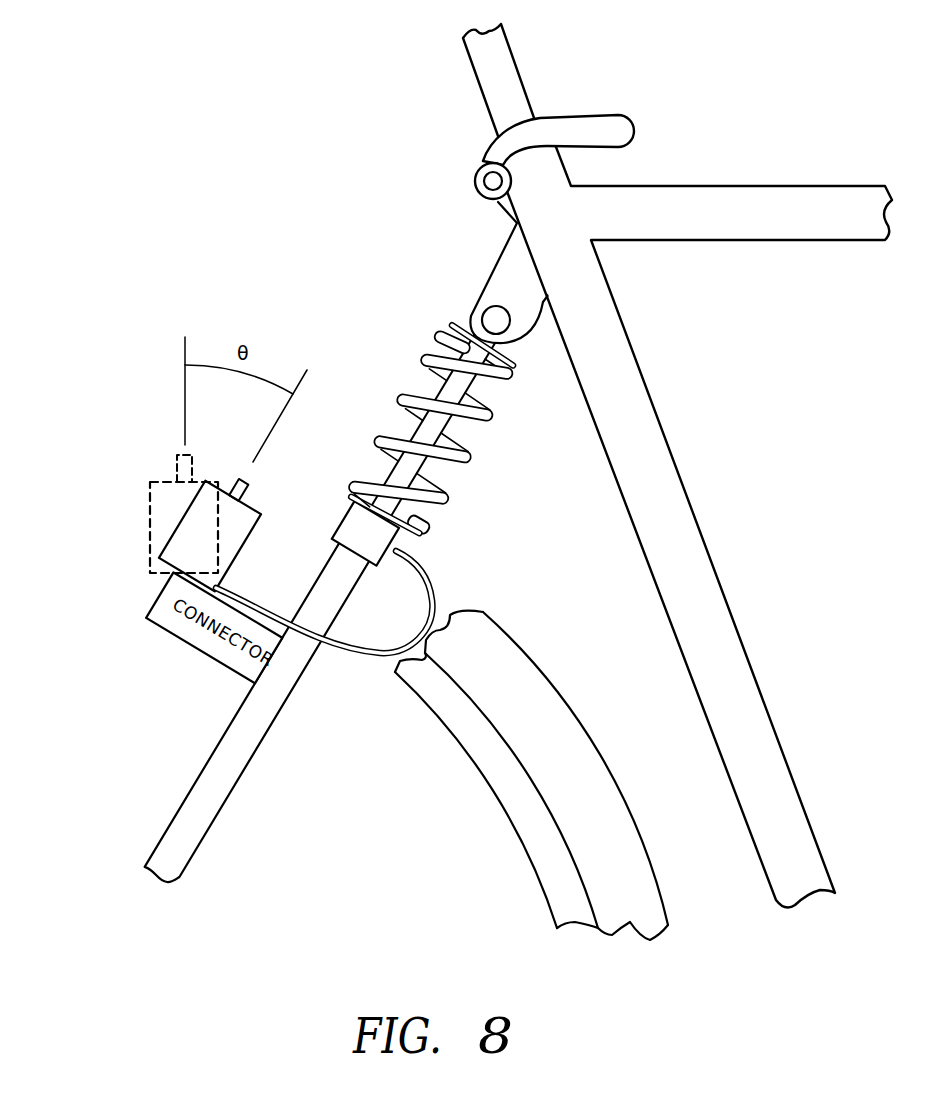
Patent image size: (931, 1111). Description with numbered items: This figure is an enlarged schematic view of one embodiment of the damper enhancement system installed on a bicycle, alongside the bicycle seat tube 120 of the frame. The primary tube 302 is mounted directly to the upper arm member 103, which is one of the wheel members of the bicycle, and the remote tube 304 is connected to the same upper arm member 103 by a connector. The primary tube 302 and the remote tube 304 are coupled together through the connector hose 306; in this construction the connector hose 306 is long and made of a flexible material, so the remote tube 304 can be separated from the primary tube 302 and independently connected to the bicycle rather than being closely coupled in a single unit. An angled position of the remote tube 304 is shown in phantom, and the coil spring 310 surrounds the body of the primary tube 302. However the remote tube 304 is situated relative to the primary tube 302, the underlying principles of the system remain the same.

The upper arm member 103 is at (207, 767).
The bicycle seat tube 120 is at (694, 521).
The primary tube 302 is at (430, 472).
The remote tube 304 is at (150, 511).
The connector hose 306 is at (433, 592).
The coil spring 310 is at (473, 355).